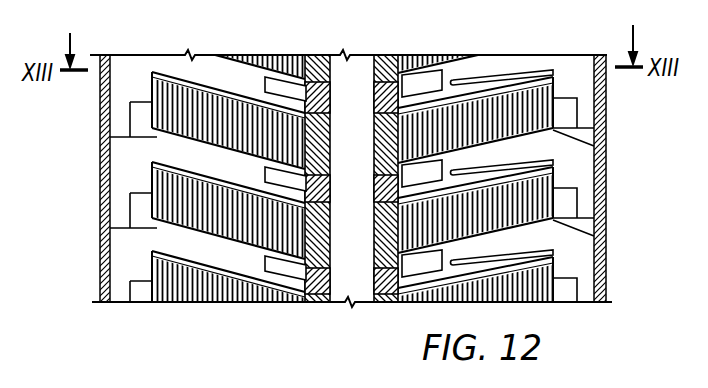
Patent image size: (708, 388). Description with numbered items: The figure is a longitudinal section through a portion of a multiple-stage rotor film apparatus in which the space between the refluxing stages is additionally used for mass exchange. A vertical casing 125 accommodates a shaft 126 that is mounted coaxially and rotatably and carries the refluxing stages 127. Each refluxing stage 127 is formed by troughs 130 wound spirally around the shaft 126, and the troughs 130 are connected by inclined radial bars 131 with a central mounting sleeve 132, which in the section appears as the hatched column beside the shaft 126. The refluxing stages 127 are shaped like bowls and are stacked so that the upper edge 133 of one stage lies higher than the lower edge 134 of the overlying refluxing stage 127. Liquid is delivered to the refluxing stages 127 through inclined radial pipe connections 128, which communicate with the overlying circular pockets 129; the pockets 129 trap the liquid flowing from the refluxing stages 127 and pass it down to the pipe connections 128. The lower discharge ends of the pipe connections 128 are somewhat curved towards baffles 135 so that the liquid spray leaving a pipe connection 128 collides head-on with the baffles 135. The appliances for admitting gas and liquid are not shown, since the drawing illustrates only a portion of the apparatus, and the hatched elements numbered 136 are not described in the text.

The vertical casing 125 is at (103, 265).
The shaft 126 is at (346, 53).
The refluxing stages 127 is at (562, 177).
The inclined radial pipe connections 128 is at (566, 236).
The circular pockets 129 is at (128, 210).
The troughs 130 is at (555, 77).
The inclined radial bars 131 is at (525, 75).
The central mounting sleeve 132 is at (310, 243).
The upper edge 133 is at (153, 254).
The lower edge 134 is at (302, 262).
The baffles 135 is at (276, 86).
The central core bar 136 is at (379, 96).